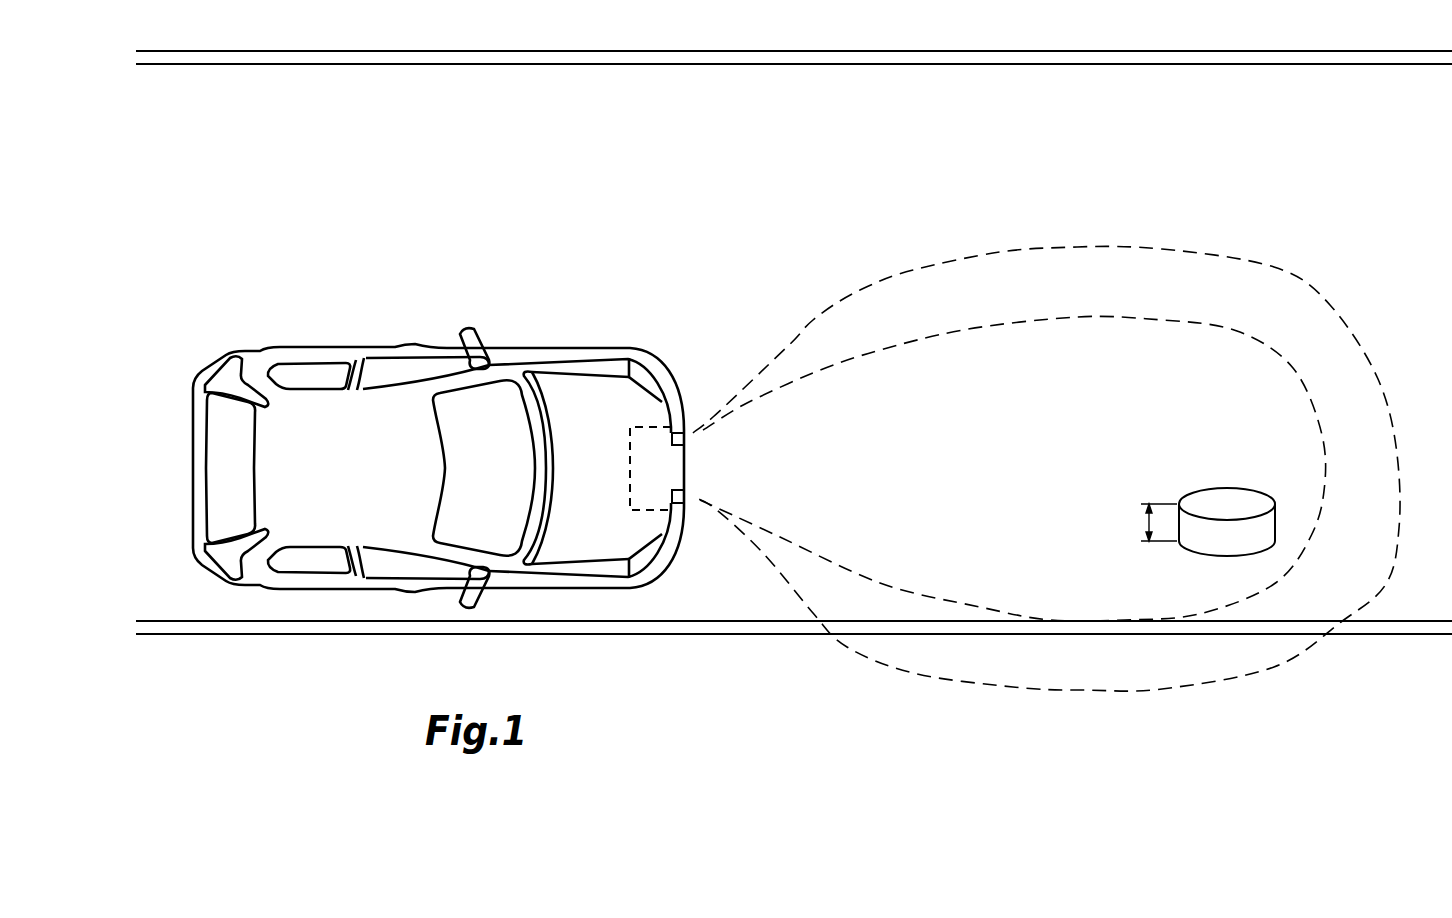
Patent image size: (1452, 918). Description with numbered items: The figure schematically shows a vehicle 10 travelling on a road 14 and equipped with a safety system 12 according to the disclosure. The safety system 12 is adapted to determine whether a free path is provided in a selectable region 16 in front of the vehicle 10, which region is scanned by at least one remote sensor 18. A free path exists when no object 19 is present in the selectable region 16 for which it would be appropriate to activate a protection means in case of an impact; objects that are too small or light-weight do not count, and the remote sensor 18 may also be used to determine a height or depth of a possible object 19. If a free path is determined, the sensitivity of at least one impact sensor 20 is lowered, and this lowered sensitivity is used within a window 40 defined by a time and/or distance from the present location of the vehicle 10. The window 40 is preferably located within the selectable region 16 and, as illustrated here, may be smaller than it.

The vehicle 10 is at (632, 315).
The safety system 12 is at (632, 490).
The road 14 is at (803, 192).
The selectable region 16 is at (1124, 295).
The remote sensor 18 is at (684, 440).
The object 19 is at (1218, 541).
The impact sensor 20 is at (686, 500).
The window 40 is at (1045, 439).